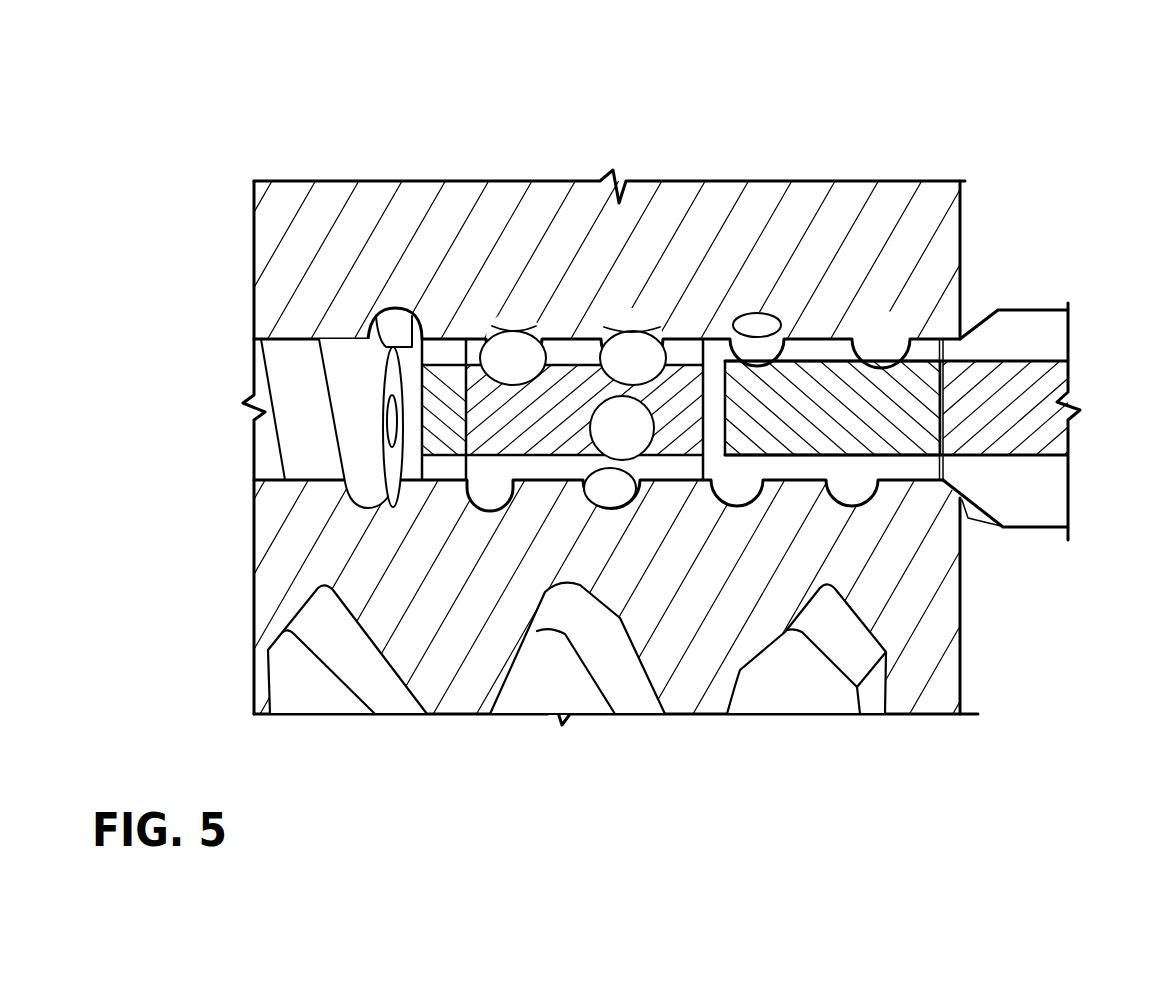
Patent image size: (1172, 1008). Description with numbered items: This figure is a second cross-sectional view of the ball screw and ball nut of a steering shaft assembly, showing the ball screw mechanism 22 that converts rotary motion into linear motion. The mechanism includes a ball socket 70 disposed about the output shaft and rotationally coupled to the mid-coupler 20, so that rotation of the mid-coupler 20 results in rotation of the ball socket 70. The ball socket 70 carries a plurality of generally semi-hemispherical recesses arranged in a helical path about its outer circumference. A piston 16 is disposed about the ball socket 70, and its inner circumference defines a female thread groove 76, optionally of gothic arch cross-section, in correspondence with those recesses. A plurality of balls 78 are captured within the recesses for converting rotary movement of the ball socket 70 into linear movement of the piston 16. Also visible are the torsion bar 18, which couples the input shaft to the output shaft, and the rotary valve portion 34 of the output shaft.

The piston 16 is at (897, 242).
The torsion bar 18 is at (872, 385).
The mid-coupler 20 is at (892, 467).
The ball screw mechanism 22 is at (472, 178).
The rotary valve portion 34 is at (1033, 332).
The ball socket 70 is at (578, 353).
The female thread groove 76 is at (763, 328).
The balls 78 is at (604, 494).